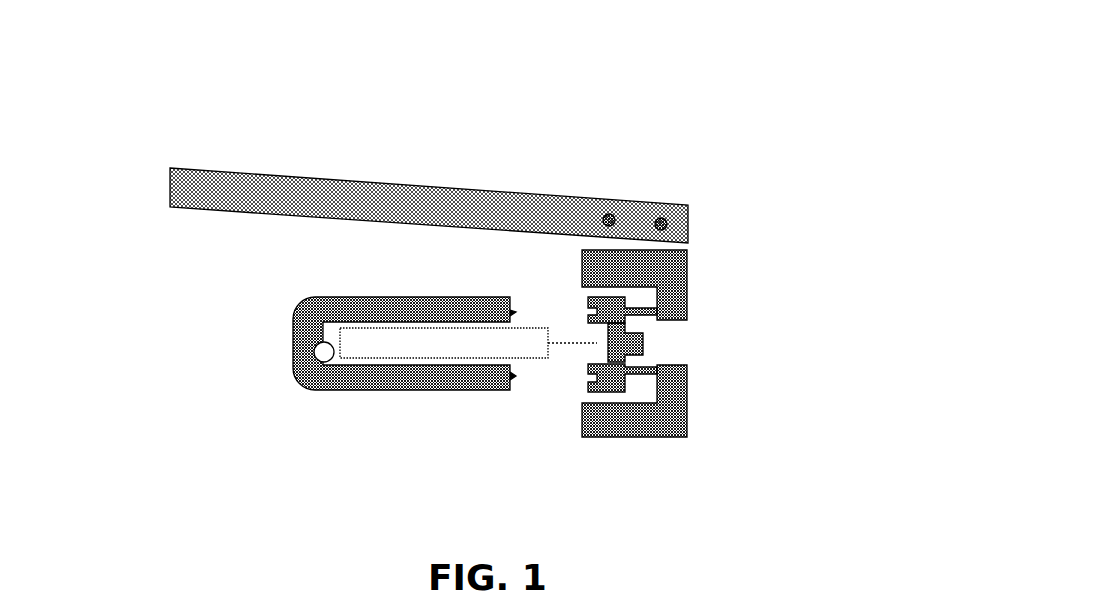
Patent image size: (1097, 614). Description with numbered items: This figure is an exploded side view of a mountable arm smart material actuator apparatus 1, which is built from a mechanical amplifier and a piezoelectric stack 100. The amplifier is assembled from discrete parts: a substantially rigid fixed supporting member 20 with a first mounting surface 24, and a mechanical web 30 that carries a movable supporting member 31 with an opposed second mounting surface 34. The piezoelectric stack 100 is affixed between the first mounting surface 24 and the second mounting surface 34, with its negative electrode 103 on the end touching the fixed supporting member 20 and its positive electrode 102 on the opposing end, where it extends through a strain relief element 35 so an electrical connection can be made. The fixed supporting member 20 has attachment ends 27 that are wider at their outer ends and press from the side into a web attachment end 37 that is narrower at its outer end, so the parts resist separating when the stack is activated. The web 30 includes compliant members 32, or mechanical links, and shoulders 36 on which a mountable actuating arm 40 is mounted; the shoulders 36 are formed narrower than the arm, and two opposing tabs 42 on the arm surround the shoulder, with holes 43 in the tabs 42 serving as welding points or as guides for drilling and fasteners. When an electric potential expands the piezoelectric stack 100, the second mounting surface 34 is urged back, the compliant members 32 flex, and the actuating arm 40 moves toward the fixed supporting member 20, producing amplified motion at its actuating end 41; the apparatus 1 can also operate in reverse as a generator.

The mountable arm smart material actuator apparatus 1 is at (688, 95).
The fixed supporting member 20 is at (293, 350).
The first mounting surface 24 is at (337, 363).
The attachment ends 27 is at (510, 312).
The mechanical web 30 is at (688, 387).
The movable supporting member 31 is at (618, 350).
The compliant members 32 is at (640, 312).
The second mounting surface 34 is at (603, 352).
The strain relief element 35 is at (643, 343).
The shoulders 36 is at (688, 270).
The web attachment end 37 is at (588, 303).
The mountable actuating arm 40 is at (422, 187).
The actuating end 41 is at (170, 190).
The tabs 42 is at (688, 222).
The holes 43 is at (661, 218).
The piezoelectric stack 100 is at (375, 340).
The positive electrode 102 is at (577, 342).
The negative electrode 103 is at (337, 337).